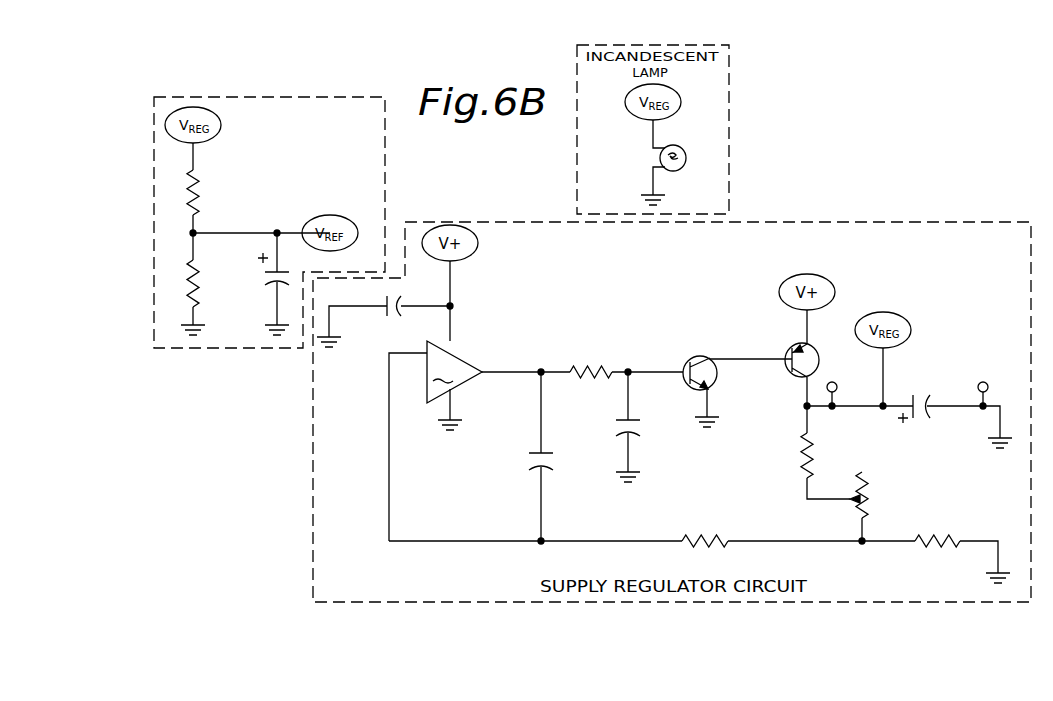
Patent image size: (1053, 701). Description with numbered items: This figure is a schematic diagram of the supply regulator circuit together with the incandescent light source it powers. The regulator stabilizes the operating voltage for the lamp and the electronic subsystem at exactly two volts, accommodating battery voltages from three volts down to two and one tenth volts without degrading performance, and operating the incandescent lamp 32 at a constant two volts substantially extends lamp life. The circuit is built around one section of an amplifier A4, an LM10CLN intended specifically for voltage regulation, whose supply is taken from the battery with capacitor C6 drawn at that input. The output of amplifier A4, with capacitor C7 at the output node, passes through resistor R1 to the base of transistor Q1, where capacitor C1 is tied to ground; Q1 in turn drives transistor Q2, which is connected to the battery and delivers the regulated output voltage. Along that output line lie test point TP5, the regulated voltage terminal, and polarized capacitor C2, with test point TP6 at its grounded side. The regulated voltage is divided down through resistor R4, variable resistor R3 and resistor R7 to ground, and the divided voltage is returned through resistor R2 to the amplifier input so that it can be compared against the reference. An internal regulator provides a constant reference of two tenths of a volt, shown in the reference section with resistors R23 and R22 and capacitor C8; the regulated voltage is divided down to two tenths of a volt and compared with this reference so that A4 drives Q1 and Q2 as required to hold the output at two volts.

The incandescent lamp 32 is at (684, 154).
The resistor R23 is at (210, 192).
The resistor R22 is at (210, 283).
The capacitor C8 is at (270, 286).
The capacitor C6 is at (389, 309).
The amplifier A4 is at (454, 380).
The resistor R1 is at (591, 362).
The capacitor C7 is at (556, 450).
The capacitor C1 is at (632, 422).
The transistor Q1 is at (705, 356).
The transistor Q2 is at (815, 358).
The test point TP5 is at (831, 388).
The capacitor C2 is at (928, 397).
The test point TP6 is at (981, 387).
The resistor R4 is at (819, 442).
The variable resistor R3 is at (871, 506).
The resistor R2 is at (705, 532).
The resistor R7 is at (937, 532).